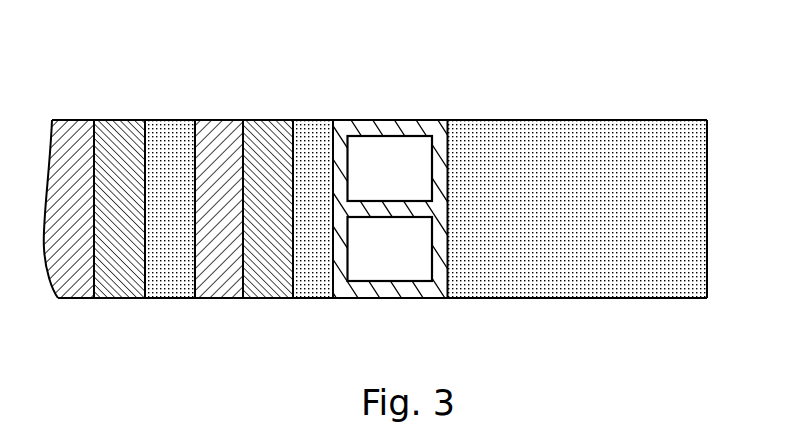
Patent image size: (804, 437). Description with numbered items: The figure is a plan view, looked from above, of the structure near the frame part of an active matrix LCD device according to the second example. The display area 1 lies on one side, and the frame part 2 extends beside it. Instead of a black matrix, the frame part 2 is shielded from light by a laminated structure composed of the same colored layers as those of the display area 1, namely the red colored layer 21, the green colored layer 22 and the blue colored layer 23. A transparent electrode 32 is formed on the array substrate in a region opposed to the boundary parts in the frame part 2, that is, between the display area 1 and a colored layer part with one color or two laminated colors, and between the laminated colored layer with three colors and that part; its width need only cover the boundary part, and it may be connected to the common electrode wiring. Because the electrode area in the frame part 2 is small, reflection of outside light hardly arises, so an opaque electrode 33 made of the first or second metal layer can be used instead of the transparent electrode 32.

The display area 1 is at (45, 93).
The frame part 2 is at (708, 93).
The red colored layer 21 is at (222, 285).
The green colored layer 22 is at (275, 285).
The blue colored layer 23 is at (170, 285).
The transparent electrode 32 is at (387, 243).
The opaque electrode 33 is at (433, 283).